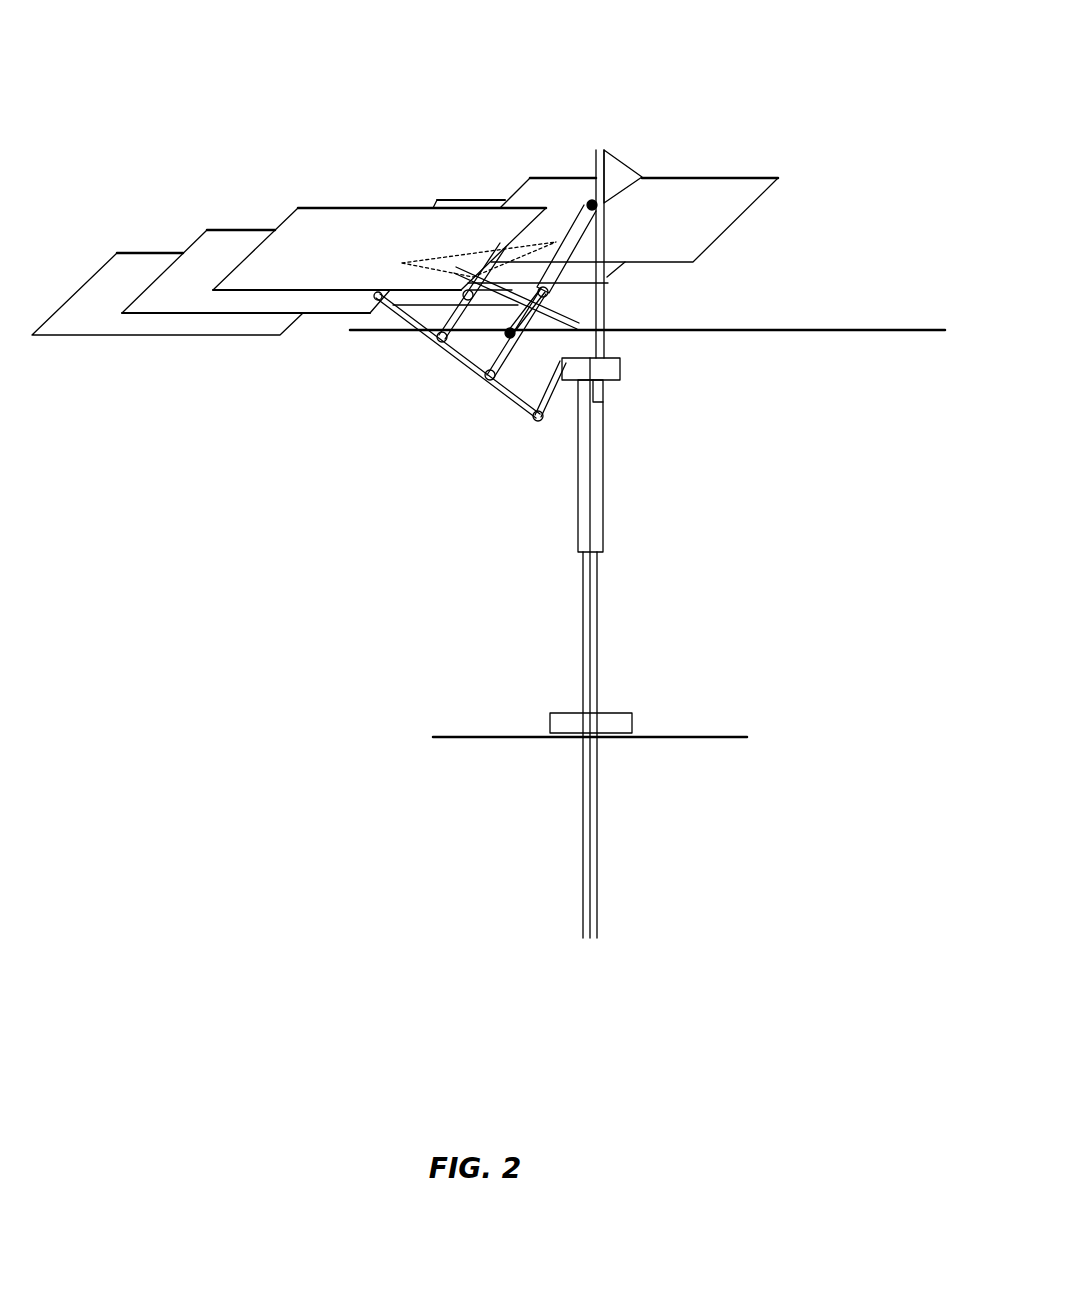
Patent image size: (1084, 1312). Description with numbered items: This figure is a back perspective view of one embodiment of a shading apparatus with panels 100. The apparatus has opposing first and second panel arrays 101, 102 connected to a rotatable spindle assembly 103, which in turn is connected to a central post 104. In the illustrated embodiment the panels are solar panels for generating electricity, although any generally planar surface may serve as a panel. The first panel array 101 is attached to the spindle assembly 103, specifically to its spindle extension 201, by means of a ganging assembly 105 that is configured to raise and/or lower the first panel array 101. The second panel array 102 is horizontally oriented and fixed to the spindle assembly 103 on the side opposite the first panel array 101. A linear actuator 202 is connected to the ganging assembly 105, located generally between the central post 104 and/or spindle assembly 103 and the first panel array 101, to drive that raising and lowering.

The shading apparatus with panels 100 is at (683, 48).
The first panel array 101 is at (138, 272).
The second panel array 102 is at (828, 325).
The spindle assembly 103 is at (598, 487).
The central post 104 is at (590, 621).
The ganging assembly 105 is at (488, 375).
The spindle extension 201 is at (597, 272).
The linear actuator 202 is at (562, 247).